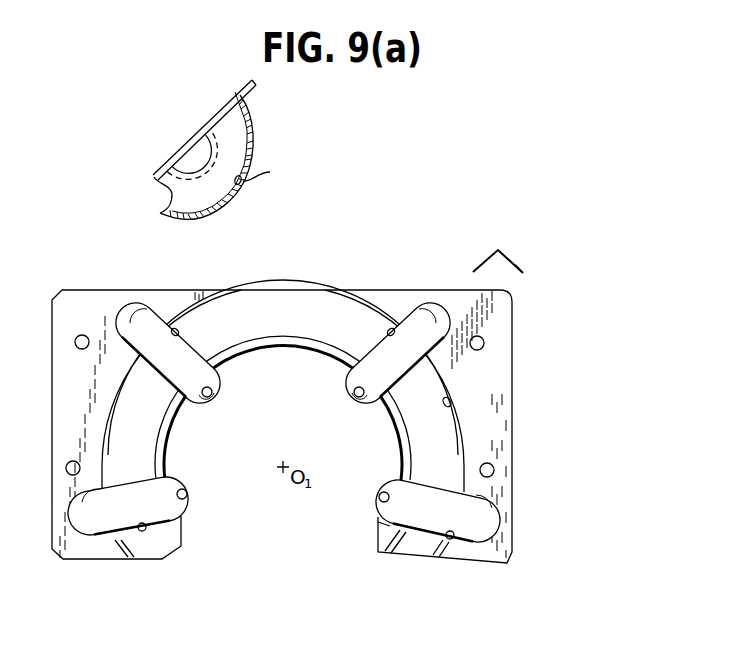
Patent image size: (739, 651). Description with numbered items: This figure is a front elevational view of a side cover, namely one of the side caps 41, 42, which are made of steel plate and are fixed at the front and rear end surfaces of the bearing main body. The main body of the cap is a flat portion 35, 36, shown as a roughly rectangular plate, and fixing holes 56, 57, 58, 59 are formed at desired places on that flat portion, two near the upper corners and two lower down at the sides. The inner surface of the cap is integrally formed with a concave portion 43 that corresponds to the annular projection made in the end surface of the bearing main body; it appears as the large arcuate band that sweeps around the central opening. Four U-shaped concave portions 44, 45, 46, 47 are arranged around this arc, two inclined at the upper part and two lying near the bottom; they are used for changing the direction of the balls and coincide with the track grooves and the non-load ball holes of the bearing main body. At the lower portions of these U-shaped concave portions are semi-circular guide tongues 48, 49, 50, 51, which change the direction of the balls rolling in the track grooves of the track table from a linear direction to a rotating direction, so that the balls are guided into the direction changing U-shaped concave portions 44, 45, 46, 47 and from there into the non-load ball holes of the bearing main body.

The flat portion 35 is at (332, 406).
The flat portion 36 is at (512, 376).
The side cap 41 is at (283, 286).
The side cap 42 is at (283, 367).
The concave portion 43 is at (200, 142).
The U-shaped concave portion 44 is at (178, 332).
The U-shaped concave portion 45 is at (388, 332).
The U-shaped concave portion 46 is at (142, 531).
The U-shaped concave portion 47 is at (450, 539).
The semi-circular guide tongue 48 is at (213, 391).
The semi-circular guide tongue 49 is at (356, 397).
The semi-circular guide tongue 50 is at (188, 495).
The semi-circular guide tongue 51 is at (379, 497).
The fixing hole 56 is at (75, 342).
The fixing hole 57 is at (484, 343).
The fixing hole 58 is at (66, 468).
The fixing hole 59 is at (494, 469).